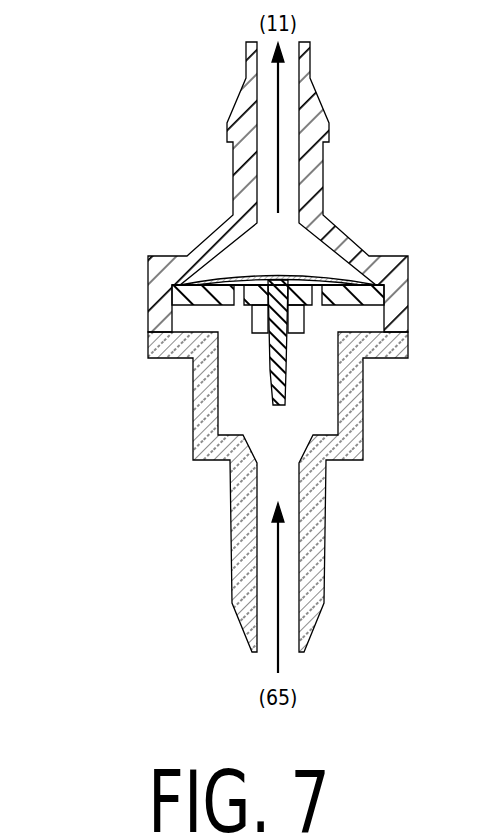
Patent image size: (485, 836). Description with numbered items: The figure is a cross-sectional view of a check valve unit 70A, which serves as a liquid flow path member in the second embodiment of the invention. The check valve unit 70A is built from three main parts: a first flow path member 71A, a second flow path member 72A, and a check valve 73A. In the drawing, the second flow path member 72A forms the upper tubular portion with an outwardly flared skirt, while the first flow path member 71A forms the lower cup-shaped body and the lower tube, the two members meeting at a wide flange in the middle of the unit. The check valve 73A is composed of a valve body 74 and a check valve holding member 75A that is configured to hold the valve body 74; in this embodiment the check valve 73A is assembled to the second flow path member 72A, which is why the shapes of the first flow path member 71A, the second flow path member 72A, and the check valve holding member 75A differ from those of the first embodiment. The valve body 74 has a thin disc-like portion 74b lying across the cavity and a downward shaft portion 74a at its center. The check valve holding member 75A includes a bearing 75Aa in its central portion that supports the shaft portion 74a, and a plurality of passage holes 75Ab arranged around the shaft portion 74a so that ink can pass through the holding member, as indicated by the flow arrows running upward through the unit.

The check valve unit 70A is at (239, 347).
The second flow path member 72A is at (325, 188).
The first flow path member 71A is at (350, 417).
The check valve 73A is at (217, 315).
The valve body 74 is at (226, 315).
The shaft portion 74a is at (268, 352).
The disc portion of valve body 74b is at (310, 277).
The check valve holding member 75A is at (247, 343).
The bearing 75Aa is at (265, 320).
The passage holes 75Ab is at (320, 303).